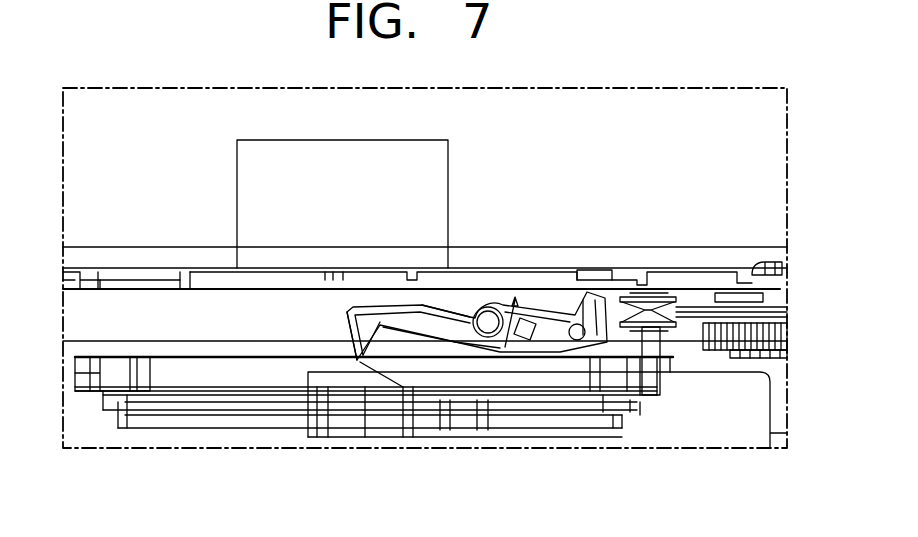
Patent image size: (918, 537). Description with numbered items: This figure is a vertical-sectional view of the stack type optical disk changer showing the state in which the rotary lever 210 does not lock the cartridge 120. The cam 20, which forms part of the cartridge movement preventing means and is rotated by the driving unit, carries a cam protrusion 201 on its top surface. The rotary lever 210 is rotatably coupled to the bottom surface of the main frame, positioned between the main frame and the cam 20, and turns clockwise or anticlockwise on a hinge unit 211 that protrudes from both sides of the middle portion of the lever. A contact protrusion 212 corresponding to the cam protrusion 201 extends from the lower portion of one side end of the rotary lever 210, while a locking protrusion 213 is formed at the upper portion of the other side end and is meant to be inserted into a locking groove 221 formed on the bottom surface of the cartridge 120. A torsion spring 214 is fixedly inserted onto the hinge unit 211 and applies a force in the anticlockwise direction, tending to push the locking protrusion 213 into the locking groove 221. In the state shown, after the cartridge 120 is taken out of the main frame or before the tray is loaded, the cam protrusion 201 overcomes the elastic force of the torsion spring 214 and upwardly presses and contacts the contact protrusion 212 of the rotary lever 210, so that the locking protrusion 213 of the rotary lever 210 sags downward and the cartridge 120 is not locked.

The cartridge 120 is at (152, 272).
The cam 20 is at (219, 397).
The cam protrusion 201 is at (313, 372).
The contact protrusion 212 is at (358, 360).
The rotary lever 210 is at (423, 335).
The torsion spring 214 is at (457, 308).
The hinge unit 211 is at (487, 322).
The locking groove 221 is at (588, 275).
The locking protrusion 213 is at (620, 288).